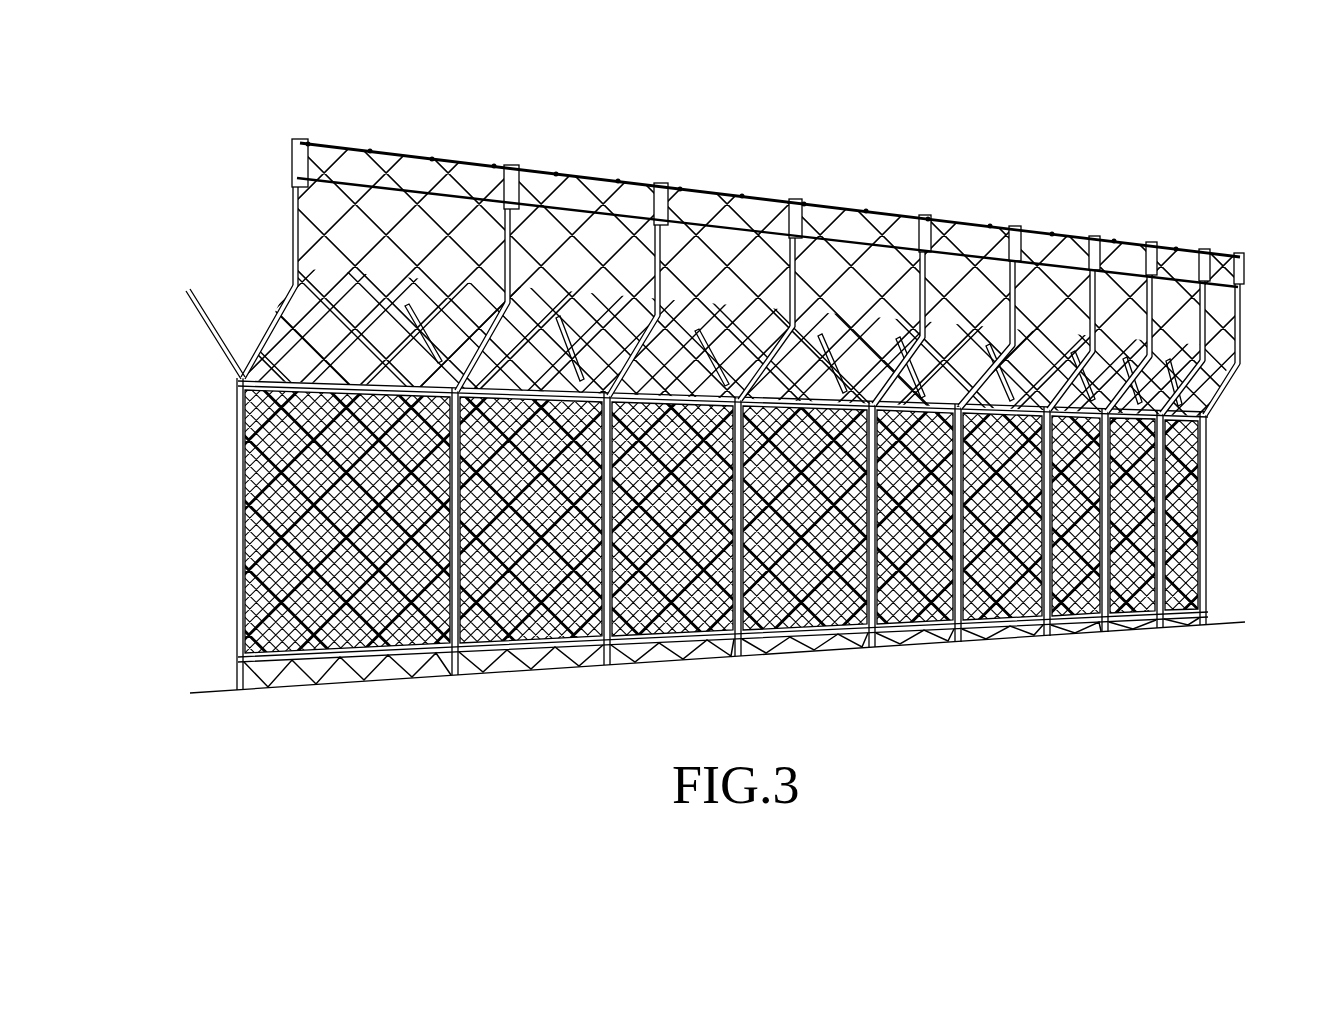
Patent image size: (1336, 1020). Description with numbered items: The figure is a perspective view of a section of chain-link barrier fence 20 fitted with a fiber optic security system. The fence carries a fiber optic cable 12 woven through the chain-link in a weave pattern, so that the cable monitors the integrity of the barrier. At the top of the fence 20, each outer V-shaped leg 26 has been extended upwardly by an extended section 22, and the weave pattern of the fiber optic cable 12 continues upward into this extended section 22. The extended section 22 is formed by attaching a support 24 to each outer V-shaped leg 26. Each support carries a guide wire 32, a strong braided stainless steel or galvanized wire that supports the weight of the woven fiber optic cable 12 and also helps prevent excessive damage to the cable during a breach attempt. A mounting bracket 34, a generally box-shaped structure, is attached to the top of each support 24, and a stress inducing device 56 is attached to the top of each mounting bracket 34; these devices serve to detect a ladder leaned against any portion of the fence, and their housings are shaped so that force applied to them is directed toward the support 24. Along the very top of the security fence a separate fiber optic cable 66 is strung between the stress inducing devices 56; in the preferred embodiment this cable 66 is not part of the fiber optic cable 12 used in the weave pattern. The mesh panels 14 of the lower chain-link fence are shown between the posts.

The fiber optic cable 12 is at (250, 597).
The chain-link mesh 14 is at (265, 545).
The chain-link barrier fence 20 is at (668, 510).
The extended section 22 is at (668, 510).
The support 24 is at (293, 275).
The outer V-shaped leg 26 is at (275, 322).
The guide wire 32 is at (577, 206).
The mounting bracket 34 is at (293, 213).
The stress inducing device 56 is at (303, 140).
The fiber optic cable 66 is at (400, 155).